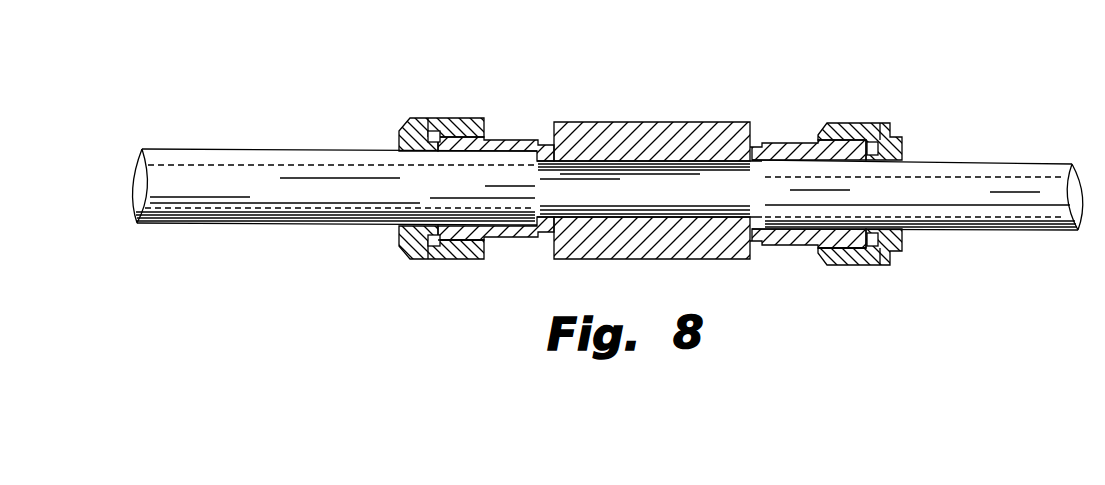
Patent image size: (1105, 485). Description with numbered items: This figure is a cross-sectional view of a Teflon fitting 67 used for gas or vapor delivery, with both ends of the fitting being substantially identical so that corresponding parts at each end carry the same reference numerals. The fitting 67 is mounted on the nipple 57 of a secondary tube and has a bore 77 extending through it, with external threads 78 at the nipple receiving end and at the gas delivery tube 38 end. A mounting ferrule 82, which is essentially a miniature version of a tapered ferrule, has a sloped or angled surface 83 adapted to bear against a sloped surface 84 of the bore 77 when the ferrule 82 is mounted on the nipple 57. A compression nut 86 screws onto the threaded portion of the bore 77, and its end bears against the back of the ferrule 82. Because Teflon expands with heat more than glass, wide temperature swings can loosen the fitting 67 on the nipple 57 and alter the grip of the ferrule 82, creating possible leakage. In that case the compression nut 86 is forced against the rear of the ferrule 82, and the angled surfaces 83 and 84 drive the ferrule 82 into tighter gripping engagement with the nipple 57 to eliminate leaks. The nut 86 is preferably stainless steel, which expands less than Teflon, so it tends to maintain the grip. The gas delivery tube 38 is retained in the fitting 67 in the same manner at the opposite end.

The gas delivery tube 38 is at (281, 150).
The nipple 57 is at (1003, 161).
The Teflon fitting 67 is at (667, 72).
The bore 77 is at (653, 176).
The external threads 78 is at (487, 130).
The mounting ferrule 82 is at (418, 240).
The sloped or angled surface 83 is at (428, 132).
The sloped surface 84 is at (448, 125).
The compression nut 86 is at (404, 121).